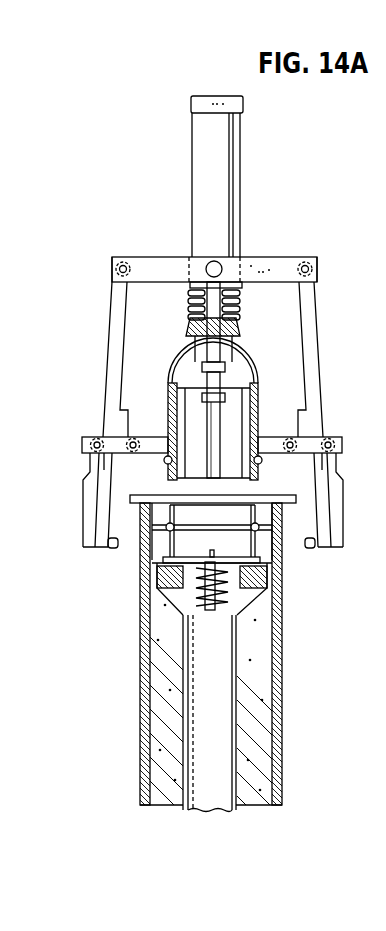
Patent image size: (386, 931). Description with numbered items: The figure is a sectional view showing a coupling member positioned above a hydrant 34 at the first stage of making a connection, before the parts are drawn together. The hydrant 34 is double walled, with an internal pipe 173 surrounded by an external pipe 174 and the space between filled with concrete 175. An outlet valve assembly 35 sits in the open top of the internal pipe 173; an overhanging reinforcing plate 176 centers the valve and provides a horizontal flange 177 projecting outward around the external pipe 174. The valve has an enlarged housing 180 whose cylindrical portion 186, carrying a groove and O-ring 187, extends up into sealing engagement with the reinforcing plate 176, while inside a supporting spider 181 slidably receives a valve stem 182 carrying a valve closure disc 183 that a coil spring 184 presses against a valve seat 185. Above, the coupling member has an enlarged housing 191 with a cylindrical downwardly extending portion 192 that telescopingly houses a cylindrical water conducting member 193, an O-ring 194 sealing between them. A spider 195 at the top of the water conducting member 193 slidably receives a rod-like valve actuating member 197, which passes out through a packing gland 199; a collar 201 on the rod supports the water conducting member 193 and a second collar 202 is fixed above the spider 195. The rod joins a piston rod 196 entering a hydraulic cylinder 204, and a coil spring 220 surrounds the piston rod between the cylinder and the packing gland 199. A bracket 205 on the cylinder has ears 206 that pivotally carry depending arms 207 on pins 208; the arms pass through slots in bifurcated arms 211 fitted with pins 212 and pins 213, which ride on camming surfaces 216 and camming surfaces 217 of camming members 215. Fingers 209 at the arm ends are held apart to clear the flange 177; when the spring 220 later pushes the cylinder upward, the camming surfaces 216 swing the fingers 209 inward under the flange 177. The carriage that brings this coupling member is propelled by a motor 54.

The motor 54 is at (323, 374).
The hydraulic cylinder 204 is at (241, 172).
The bracket 205 is at (259, 265).
The ears 206 is at (112, 266).
The pins 208 is at (123, 262).
The depending arms 207 is at (115, 320).
The bifurcated arms 211 is at (82, 445).
The pins 212 is at (96, 440).
The pins 213 is at (134, 440).
The camming members 215 is at (88, 510).
The camming surfaces 216 is at (92, 460).
The camming surfaces 217 is at (118, 470).
The fingers 209 is at (113, 549).
The coil spring 220 is at (188, 297).
The piston rod 196 is at (241, 297).
The packing gland 199 is at (239, 333).
The enlarged housing 191 is at (180, 354).
The second collar 202 is at (201, 366).
The spider 195 is at (222, 388).
The cylindrical downwardly extending portion 192 is at (173, 394).
The cylindrical water conducting member 193 is at (252, 408).
The collar 201 is at (223, 403).
The valve actuating member 197 is at (215, 468).
The O-ring 194 is at (165, 461).
The hydrant 34 is at (285, 686).
The reinforcing plate 176 is at (267, 496).
The flange 177 is at (143, 506).
The valve closure disc 183 is at (234, 556).
The O-ring 187 is at (200, 528).
The valve seat 185 is at (273, 553).
The cylindrical portion 186 is at (165, 548).
The enlarged housing 180 is at (165, 578).
The supporting spider 181 is at (227, 612).
The coil spring 184 is at (258, 598).
The outlet valve assembly 35 is at (274, 594).
The valve stem 182 is at (183, 622).
The internal pipe 173 is at (237, 780).
The concrete 175 is at (155, 705).
The external pipe 174 is at (283, 720).